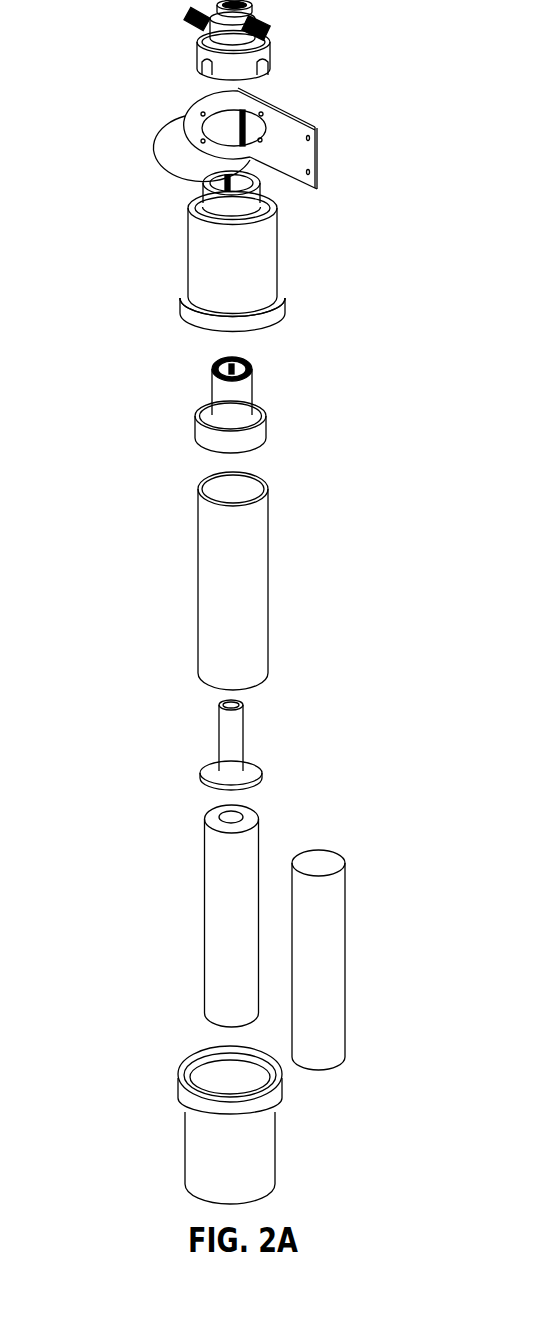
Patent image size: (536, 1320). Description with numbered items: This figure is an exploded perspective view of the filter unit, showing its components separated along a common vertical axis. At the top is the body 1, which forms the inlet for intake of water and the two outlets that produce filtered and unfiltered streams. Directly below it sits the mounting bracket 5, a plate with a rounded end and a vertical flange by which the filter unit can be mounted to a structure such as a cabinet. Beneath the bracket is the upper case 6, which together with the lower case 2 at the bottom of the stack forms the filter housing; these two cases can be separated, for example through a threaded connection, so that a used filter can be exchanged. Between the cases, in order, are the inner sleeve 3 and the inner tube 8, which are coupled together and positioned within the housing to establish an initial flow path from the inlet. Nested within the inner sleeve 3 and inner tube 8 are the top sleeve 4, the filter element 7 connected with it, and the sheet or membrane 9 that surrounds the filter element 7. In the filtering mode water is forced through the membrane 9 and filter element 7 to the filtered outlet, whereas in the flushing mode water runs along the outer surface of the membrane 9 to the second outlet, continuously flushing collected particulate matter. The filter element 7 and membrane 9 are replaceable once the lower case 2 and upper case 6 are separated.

The body 1 is at (270, 50).
The lower case 2 is at (185, 1128).
The inner sleeve 3 is at (268, 422).
The top sleeve 4 is at (245, 733).
The mounting bracket 5 is at (320, 152).
The upper case 6 is at (279, 253).
The filter element 7 is at (205, 893).
The inner tube 8 is at (266, 592).
The membrane 9 is at (346, 905).